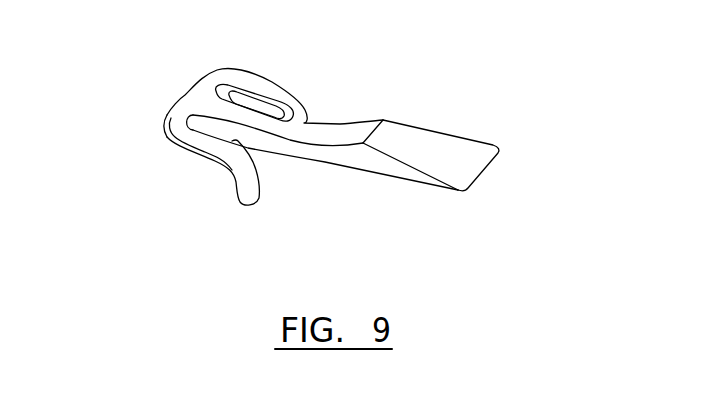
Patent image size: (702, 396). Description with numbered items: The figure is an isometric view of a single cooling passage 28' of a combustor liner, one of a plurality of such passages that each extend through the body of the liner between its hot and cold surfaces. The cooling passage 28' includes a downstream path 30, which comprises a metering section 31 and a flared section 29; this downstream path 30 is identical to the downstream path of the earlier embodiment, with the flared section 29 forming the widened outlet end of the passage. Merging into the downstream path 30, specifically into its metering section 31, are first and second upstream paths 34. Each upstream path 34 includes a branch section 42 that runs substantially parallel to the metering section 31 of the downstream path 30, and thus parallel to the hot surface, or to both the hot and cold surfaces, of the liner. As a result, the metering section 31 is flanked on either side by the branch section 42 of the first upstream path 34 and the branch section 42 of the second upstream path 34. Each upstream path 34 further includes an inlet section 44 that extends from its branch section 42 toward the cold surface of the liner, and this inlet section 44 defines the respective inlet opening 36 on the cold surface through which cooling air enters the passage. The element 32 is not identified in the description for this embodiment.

The cooling passage 28' is at (288, 87).
The flared section 29 is at (382, 166).
The downstream path 30 is at (330, 158).
The metering section 31 is at (245, 124).
The blade tip 32 is at (458, 140).
The upstream path 34 is at (203, 75).
The inlet opening 36 is at (248, 204).
The branch section 42 is at (273, 82).
The inlet section 44 is at (240, 181).